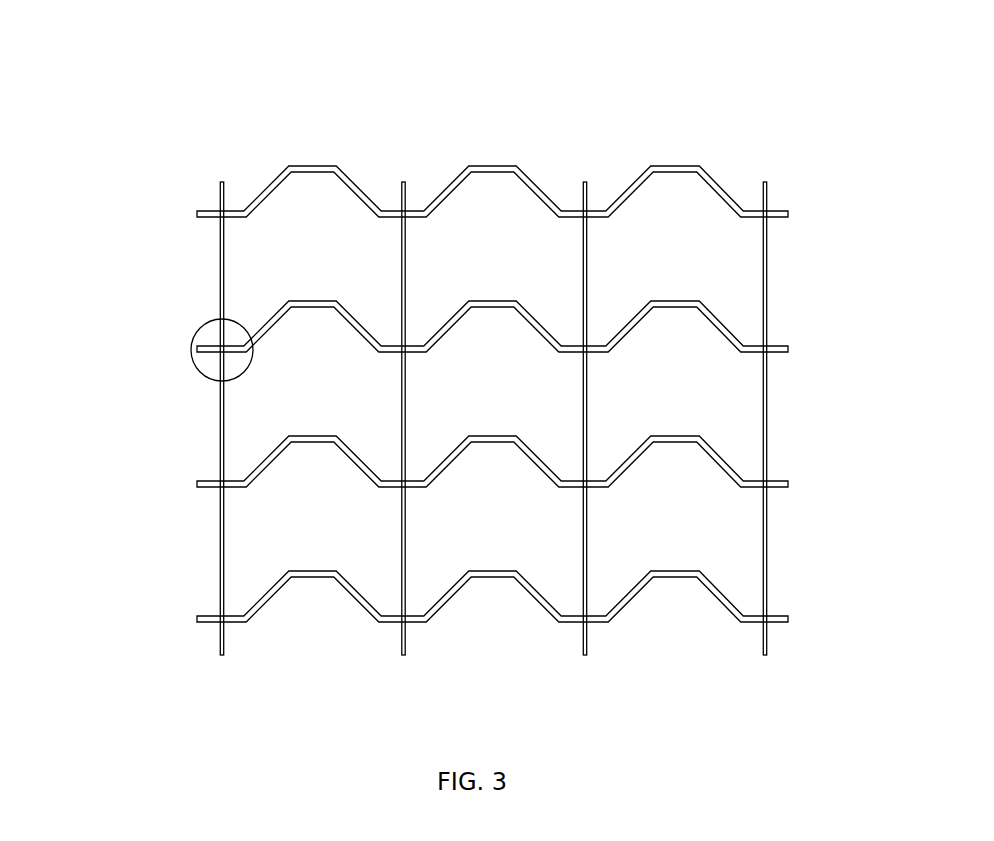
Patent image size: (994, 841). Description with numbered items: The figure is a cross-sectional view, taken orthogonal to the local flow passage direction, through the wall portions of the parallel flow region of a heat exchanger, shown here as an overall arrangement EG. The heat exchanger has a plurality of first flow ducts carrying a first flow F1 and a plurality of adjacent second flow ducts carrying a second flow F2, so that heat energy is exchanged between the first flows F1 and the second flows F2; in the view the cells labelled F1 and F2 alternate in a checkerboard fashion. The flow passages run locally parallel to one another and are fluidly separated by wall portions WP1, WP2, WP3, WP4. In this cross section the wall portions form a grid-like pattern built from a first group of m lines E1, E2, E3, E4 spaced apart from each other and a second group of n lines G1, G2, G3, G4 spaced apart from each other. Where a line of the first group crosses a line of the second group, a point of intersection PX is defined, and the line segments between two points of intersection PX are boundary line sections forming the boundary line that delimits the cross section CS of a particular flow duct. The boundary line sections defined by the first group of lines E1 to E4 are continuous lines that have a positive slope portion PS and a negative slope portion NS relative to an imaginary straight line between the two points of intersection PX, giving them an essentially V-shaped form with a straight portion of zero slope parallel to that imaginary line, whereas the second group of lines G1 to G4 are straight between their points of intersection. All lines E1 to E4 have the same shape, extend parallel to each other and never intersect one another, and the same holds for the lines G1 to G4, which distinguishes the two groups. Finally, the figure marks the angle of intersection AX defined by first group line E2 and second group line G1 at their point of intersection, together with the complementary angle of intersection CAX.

The electrode group EG is at (150, 52).
The point of intersection PX is at (228, 208).
The wall portion WP1 is at (504, 163).
The wall portion WP2 is at (412, 249).
The wall portion WP3 is at (540, 317).
The wall portion WP4 is at (593, 248).
The first group line E1 is at (722, 173).
The first group line E2 is at (728, 317).
The first group line E3 is at (740, 455).
The first group line E4 is at (732, 597).
The second group line G1 is at (214, 280).
The second group line G2 is at (383, 393).
The second group line G3 is at (576, 550).
The second group line G4 is at (757, 550).
The cross section CS is at (735, 260).
The angle of intersection AX is at (236, 338).
The complementary angle of intersection CAX is at (236, 362).
The positive slope portion PS is at (263, 458).
The negative slope portion NS is at (350, 463).
The first flow F1 is at (328, 264).
The second flow F2 is at (509, 264).